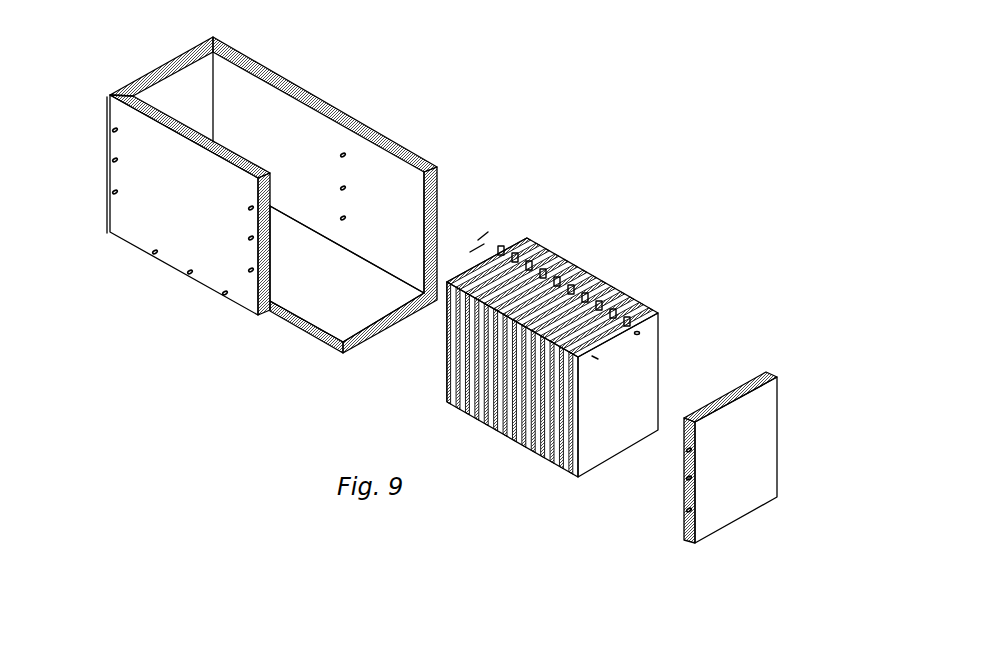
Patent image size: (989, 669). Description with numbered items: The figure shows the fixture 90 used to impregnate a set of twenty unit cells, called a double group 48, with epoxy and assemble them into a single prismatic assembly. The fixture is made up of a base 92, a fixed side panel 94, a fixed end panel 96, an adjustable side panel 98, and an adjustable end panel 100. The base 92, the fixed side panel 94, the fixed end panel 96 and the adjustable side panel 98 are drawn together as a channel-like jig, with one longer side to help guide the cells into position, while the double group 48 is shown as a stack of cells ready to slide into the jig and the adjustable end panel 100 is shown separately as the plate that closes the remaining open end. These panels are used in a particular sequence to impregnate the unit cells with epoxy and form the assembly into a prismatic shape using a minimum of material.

The housing channel 90 is at (127, 177).
The base 92 is at (335, 302).
The fixed side panel 94 is at (308, 95).
The fixed end panel 96 is at (188, 78).
The adjustable side panel 98 is at (162, 220).
The double group 48 is at (572, 222).
The adjustable end panel 100 is at (748, 425).